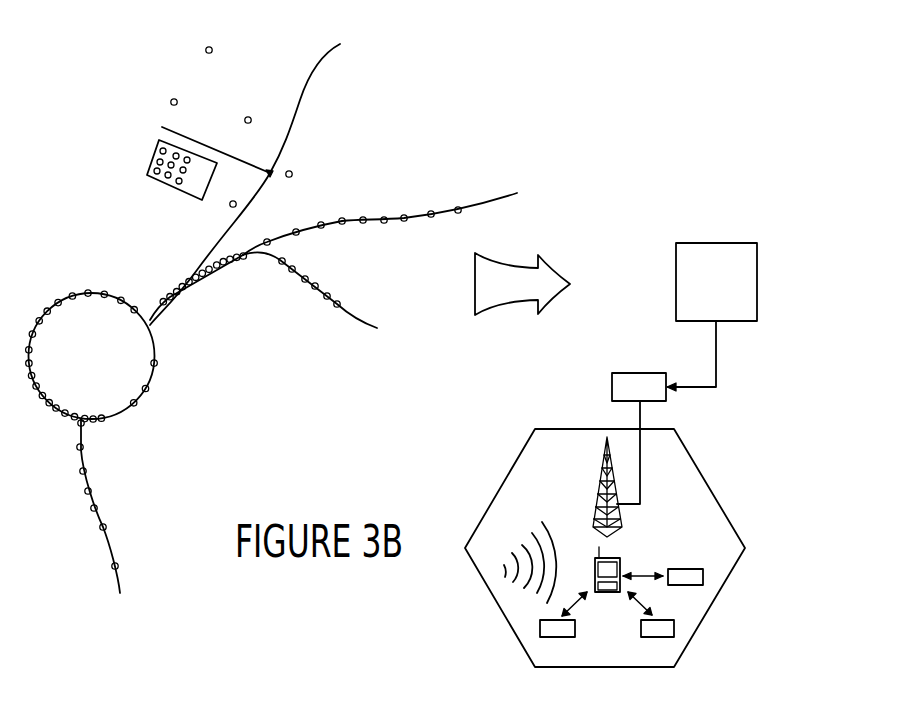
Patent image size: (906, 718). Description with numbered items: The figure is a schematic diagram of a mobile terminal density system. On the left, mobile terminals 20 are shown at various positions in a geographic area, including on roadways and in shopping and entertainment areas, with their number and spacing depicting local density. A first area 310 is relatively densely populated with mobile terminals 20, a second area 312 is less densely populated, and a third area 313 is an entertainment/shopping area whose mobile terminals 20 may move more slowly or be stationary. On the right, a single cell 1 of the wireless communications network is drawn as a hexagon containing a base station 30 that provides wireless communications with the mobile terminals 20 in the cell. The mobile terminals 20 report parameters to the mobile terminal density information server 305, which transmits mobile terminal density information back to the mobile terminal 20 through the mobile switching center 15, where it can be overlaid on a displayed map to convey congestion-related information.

The third area 313 is at (158, 169).
The first area 310 is at (200, 288).
The second area 312 is at (310, 283).
The mobile terminal density information server 305 is at (717, 243).
The mobile switching center 15 is at (612, 389).
The cell 1 is at (707, 478).
The base station 30 is at (597, 497).
The mobile terminal 20 is at (613, 557).